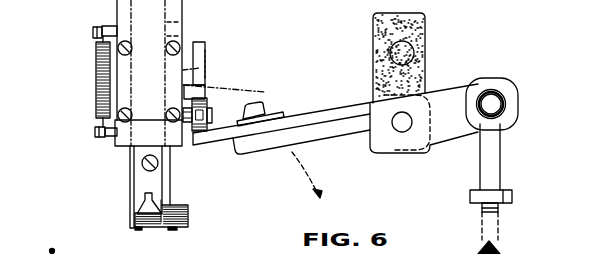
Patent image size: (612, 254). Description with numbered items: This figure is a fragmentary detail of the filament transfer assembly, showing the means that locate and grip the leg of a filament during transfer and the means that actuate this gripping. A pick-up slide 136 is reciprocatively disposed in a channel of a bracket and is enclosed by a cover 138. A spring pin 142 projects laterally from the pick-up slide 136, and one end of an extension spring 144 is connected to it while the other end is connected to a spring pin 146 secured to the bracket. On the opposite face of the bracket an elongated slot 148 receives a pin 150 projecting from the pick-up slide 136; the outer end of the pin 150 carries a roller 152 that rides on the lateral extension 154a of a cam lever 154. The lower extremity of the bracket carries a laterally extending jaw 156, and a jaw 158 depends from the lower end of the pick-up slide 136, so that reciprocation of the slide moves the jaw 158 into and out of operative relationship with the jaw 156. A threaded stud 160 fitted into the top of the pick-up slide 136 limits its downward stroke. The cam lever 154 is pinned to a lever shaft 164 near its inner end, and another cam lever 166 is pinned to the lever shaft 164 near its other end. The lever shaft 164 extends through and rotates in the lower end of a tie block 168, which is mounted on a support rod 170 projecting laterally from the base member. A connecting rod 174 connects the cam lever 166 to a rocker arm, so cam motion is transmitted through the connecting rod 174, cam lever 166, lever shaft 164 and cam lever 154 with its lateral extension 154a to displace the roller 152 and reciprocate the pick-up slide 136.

The pick-up slide 136 is at (183, 17).
The cover 138 is at (138, 140).
The spring pin 142 is at (113, 29).
The extension spring 144 is at (96, 72).
The spring pin 146 is at (95, 131).
The elongated slot 148 is at (184, 36).
The pin 150 is at (193, 97).
The roller 152 is at (209, 99).
The cam lever 154 is at (333, 128).
The lateral extension 154a is at (290, 98).
The jaw 156 is at (183, 218).
The jaw 158 is at (157, 180).
The threaded stud 160 is at (77, 248).
The lever shaft 164 is at (400, 117).
The cam lever 166 is at (445, 133).
The tie block 168 is at (418, 25).
The support rod 170 is at (407, 53).
The connecting rod 174 is at (477, 182).